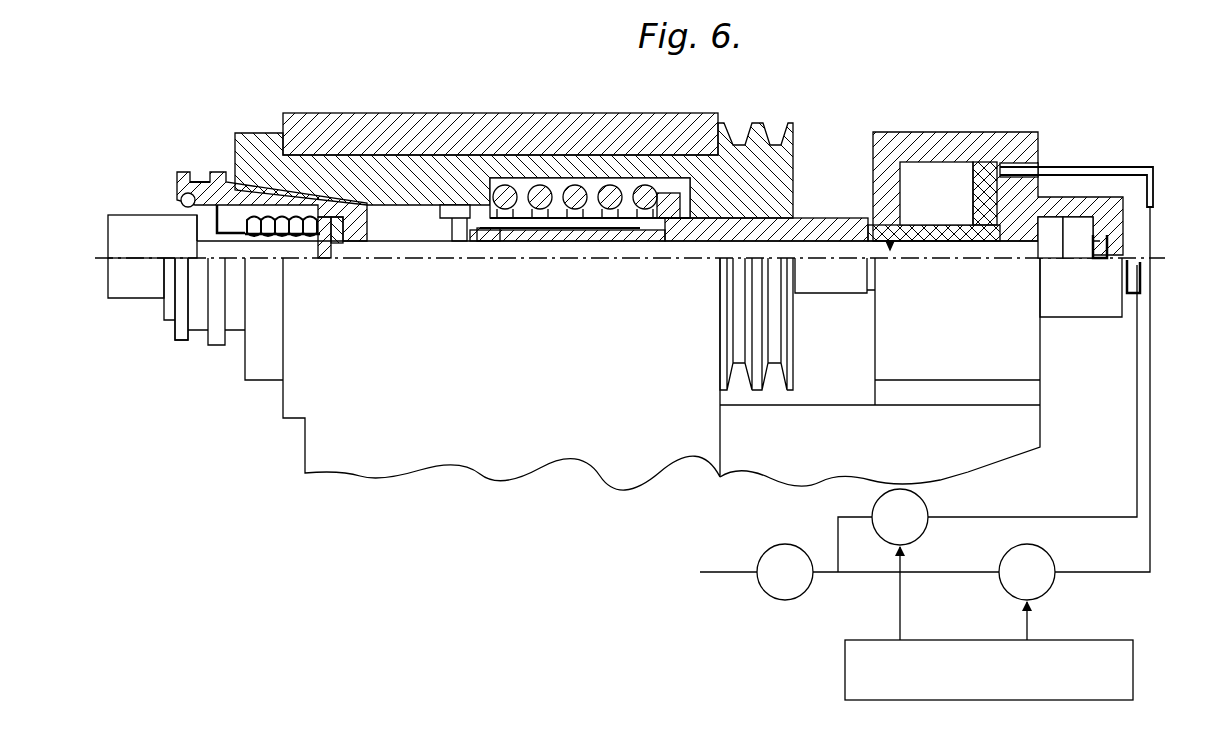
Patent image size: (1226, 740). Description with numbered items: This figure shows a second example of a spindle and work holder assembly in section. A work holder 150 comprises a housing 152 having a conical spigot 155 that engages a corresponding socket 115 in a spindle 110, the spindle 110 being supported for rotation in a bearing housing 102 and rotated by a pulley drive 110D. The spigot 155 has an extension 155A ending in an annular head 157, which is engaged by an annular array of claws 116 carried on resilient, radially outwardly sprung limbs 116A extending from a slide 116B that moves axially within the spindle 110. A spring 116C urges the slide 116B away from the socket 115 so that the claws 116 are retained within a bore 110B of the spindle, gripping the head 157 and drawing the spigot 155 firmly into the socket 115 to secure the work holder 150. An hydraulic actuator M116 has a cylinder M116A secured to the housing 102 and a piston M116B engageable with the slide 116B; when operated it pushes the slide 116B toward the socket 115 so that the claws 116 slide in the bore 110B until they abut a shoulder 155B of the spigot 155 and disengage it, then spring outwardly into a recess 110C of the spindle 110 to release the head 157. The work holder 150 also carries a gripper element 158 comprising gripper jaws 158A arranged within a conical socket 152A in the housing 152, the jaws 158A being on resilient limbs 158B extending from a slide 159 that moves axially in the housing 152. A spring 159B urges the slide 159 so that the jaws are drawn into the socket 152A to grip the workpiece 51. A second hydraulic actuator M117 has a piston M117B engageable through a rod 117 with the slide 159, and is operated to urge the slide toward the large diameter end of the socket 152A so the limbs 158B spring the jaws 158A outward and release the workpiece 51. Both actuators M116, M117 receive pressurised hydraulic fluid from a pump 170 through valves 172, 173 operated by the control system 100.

The workpiece 51 is at (123, 287).
The control system 100 is at (845, 665).
The bearing housing 102 is at (640, 135).
The spindle 110 is at (410, 160).
The bore 110B is at (446, 212).
The recess 110C is at (412, 168).
The pulley drive 110D is at (750, 145).
The socket 115 is at (372, 190).
The claws 116 is at (490, 228).
The limbs 116A is at (605, 228).
The slide 116B is at (690, 238).
The spring 116C is at (575, 185).
The rod 117 is at (827, 250).
The work holder 150 is at (158, 172).
The housing 152 is at (168, 172).
The conical socket 152A is at (210, 180).
The conical spigot 155 is at (325, 200).
The extension 155A is at (460, 228).
The shoulder 155B is at (455, 210).
The annular head 157 is at (520, 226).
The gripper element 158 is at (158, 310).
The gripper jaws 158A is at (163, 215).
The limbs 158B is at (172, 316).
The slide 159 is at (328, 248).
The spring 159B is at (217, 337).
The pump 170 is at (770, 590).
The valve 172 is at (1048, 585).
The valve 173 is at (922, 528).
The hydraulic actuator M116 is at (1042, 150).
The cylinder M116A is at (965, 150).
The piston M116B is at (978, 195).
The hydraulic actuator M117 is at (1132, 292).
The piston M117B is at (1075, 318).